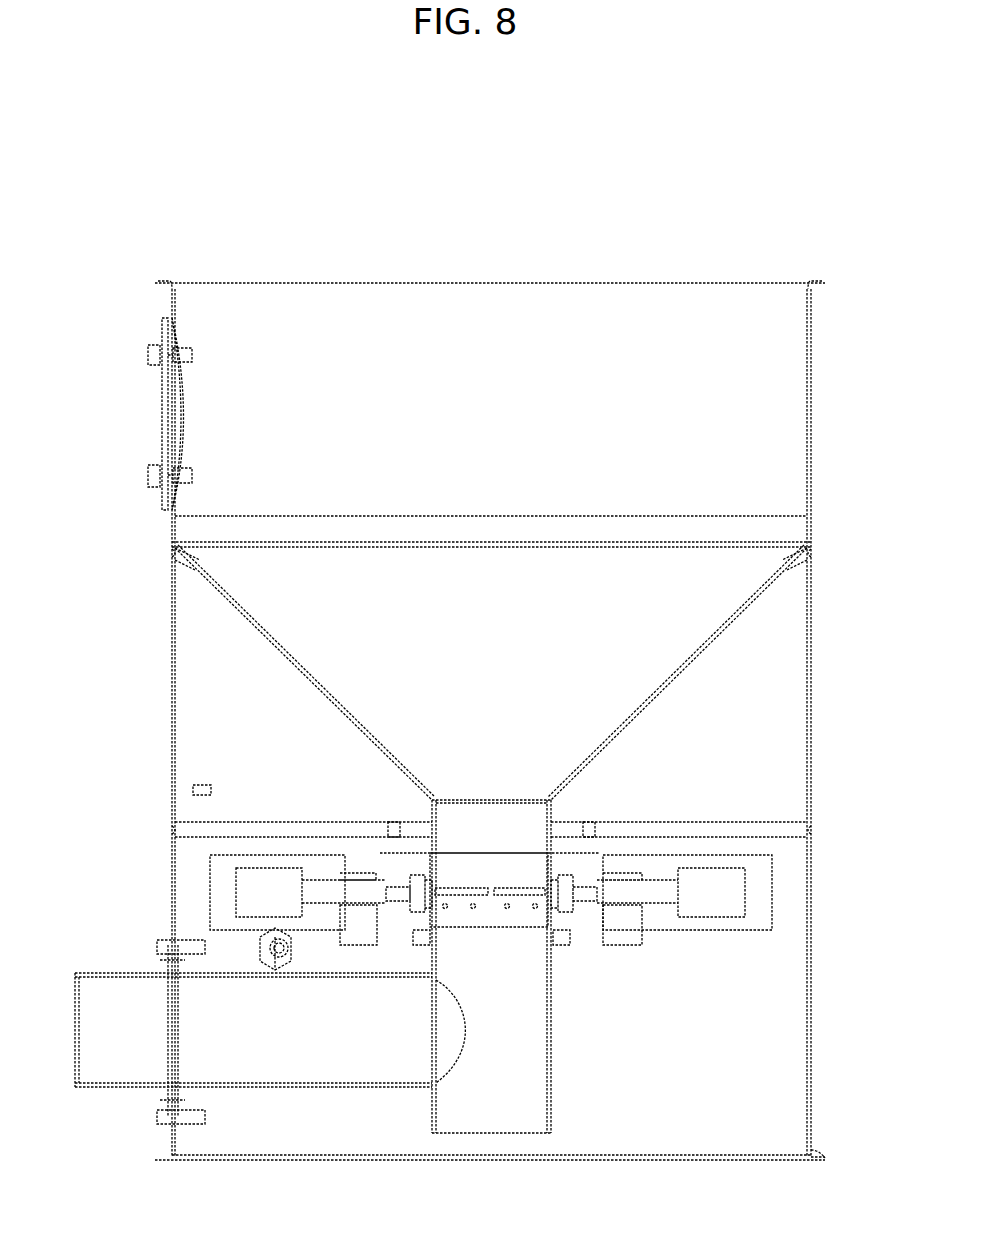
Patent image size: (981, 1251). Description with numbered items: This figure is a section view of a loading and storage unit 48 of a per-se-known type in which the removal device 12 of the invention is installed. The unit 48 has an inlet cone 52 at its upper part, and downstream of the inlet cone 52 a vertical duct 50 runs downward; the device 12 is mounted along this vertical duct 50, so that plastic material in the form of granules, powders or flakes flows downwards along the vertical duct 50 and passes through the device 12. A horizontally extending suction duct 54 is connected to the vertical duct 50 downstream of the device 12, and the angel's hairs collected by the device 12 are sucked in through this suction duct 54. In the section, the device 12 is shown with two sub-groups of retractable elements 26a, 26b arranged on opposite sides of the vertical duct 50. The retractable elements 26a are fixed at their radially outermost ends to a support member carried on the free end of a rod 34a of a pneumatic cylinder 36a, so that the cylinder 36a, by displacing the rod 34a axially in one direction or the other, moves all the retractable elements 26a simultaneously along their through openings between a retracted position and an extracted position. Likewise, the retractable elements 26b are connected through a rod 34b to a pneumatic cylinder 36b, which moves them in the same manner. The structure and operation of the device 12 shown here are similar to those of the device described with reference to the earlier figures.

The loading and storage unit 48 is at (676, 289).
The inlet cone 52 is at (638, 707).
The vertical duct 50 is at (547, 1062).
The suction duct 54 is at (112, 973).
The device 12 is at (351, 860).
The retractable elements 26a is at (461, 888).
The retractable elements 26b is at (513, 888).
The rod 34a is at (380, 878).
The rod 34b is at (612, 880).
The pneumatic cylinder 36a is at (258, 856).
The pneumatic cylinder 36b is at (687, 856).